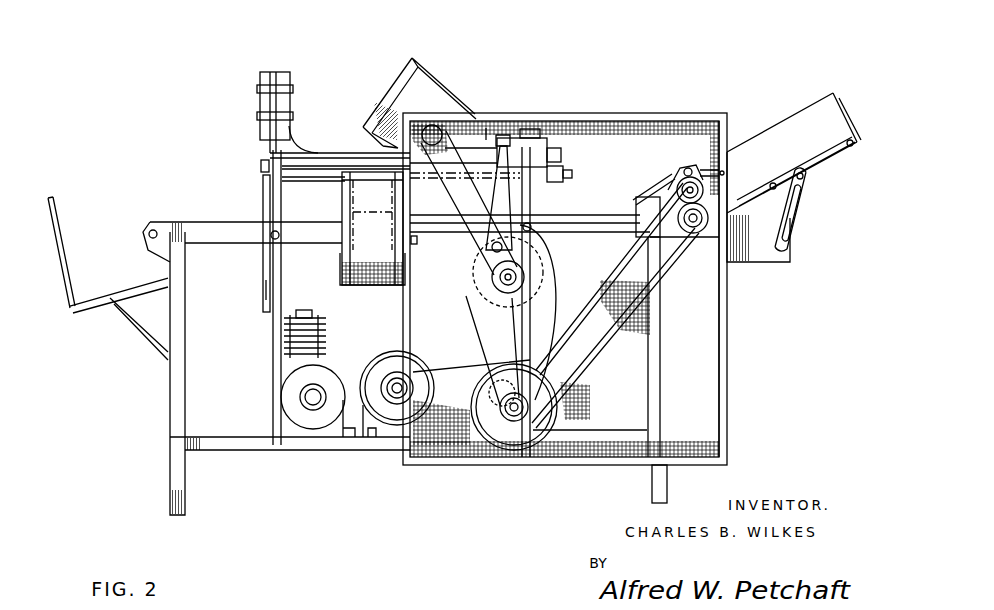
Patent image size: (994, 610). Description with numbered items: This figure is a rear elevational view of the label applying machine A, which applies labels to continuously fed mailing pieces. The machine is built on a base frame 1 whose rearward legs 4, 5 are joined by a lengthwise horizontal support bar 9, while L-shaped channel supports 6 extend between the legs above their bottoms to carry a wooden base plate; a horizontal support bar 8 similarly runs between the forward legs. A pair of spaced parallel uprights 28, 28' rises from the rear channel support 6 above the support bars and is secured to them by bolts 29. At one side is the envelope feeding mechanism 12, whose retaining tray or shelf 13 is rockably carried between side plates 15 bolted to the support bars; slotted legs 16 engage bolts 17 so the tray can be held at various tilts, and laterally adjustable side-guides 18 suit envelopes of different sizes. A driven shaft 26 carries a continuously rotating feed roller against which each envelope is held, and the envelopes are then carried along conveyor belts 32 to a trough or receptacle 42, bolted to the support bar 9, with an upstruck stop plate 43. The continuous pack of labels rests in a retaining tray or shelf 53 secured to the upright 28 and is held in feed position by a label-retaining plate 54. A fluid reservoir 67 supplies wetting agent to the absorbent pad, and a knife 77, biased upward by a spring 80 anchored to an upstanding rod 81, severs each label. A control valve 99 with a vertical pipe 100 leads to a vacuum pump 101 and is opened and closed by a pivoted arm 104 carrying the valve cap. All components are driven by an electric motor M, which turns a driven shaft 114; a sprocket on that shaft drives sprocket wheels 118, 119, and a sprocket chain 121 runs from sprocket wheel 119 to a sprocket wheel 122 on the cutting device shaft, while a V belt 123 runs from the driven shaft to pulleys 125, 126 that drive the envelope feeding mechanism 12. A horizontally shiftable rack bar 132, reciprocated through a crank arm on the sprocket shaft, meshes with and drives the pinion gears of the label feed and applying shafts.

The base frame 1 is at (280, 448).
The leg 4 is at (667, 496).
The leg 5 is at (182, 500).
The L-shaped channel support 6 is at (345, 438).
The horizontal support bar 8 is at (648, 113).
The horizontal support bar 9 is at (216, 232).
The envelope feeding mechanism 12 is at (781, 108).
The retaining tray or shelf 13 is at (828, 94).
The side plates 15 is at (764, 263).
The legs 16 is at (806, 190).
The bolts 17 is at (792, 234).
The side-guides 18 is at (762, 128).
The driven shaft 26 is at (680, 172).
The upright 28 is at (519, 426).
The upright 28' is at (254, 297).
The bolts 29 is at (271, 238).
The conveyor belts 32 is at (416, 241).
The trough or receptacle 42 is at (96, 296).
The stop plate 43 is at (58, 225).
The retaining tray or shelf 53 is at (346, 268).
The label-retaining plate 54 is at (375, 175).
The fluid reservoir 67 is at (268, 76).
The knife 77 is at (386, 138).
The spring 80 is at (382, 101).
The upstanding rod 81 is at (430, 71).
The control valve 99 is at (262, 290).
The vertical pipe 100 is at (265, 272).
The vacuum pump 101 is at (283, 330).
The arm 104 is at (261, 162).
The driven shaft 114 is at (496, 400).
The sprocket wheel 118 is at (548, 286).
The sprocket wheel 119 is at (505, 292).
The sprocket chain 121 is at (455, 163).
The sprocket wheel 122 is at (450, 132).
The V belt 123 is at (574, 372).
The pulley 125 is at (676, 187).
The pulley 126 is at (700, 240).
The rack bar 132 is at (546, 163).
The electric motor M is at (382, 362).
The label applying machine A is at (576, 101).